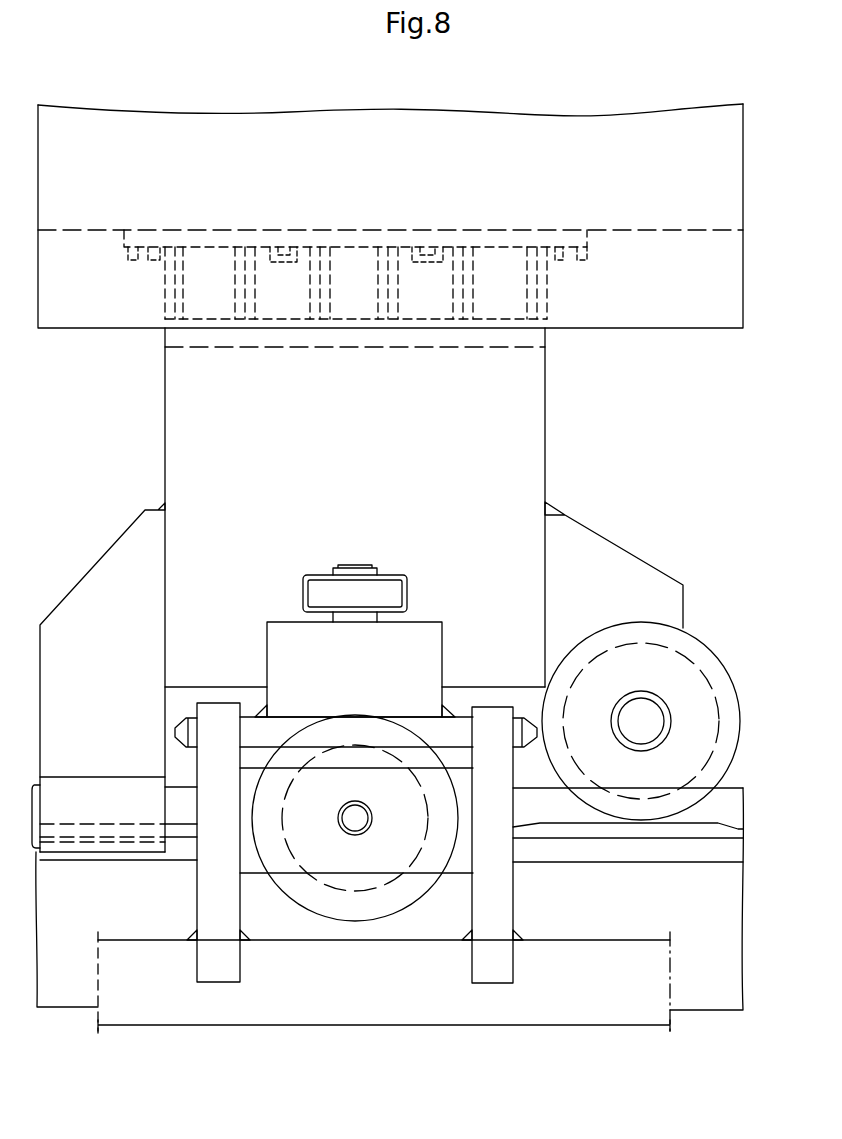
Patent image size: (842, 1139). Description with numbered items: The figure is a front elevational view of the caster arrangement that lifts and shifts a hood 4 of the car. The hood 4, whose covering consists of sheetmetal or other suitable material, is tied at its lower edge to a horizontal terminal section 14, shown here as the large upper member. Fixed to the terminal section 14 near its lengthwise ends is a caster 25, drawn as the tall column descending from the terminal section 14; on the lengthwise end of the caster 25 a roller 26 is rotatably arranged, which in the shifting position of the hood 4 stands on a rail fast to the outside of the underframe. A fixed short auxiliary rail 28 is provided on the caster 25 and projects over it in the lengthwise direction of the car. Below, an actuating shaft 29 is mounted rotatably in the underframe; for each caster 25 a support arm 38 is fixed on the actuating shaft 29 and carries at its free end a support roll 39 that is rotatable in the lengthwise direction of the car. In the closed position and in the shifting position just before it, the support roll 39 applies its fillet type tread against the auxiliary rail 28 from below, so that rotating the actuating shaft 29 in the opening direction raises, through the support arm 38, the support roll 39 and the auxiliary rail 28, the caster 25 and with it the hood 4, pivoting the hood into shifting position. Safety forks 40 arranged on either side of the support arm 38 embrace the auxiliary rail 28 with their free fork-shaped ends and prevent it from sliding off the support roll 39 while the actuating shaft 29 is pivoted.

The hood 4 is at (390, 179).
The terminal section 14 is at (136, 157).
The caster 25 is at (515, 412).
The roller 26 is at (650, 673).
The auxiliary rail 28 is at (253, 738).
The actuating shaft 29 is at (361, 990).
The support arm 38 is at (439, 818).
The support roll 39 is at (327, 900).
The safety fork 40 is at (217, 880).